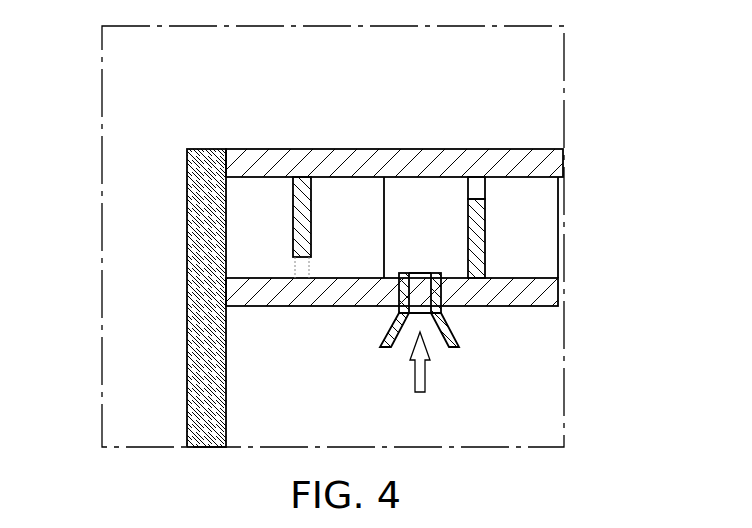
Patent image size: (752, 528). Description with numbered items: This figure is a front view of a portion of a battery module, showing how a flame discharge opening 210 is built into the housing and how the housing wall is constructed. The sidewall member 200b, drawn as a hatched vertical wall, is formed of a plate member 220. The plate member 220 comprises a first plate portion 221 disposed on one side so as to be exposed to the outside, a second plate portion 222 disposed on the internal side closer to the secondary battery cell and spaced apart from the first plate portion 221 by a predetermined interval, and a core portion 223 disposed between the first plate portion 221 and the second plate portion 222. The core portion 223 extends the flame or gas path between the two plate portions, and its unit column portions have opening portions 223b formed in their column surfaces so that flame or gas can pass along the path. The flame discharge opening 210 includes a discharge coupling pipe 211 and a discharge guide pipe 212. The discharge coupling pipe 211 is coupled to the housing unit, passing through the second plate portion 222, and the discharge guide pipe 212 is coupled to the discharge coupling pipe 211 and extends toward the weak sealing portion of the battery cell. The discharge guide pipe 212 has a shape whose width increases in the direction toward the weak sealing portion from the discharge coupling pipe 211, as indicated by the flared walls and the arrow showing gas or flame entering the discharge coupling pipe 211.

The sidewall member 200b is at (202, 197).
The flame discharge opening 210 is at (552, 339).
The discharge coupling pipe 211 is at (442, 294).
The discharge guide pipe 212 is at (457, 340).
The plate member 220 is at (476, 214).
The first plate portion 221 is at (553, 160).
The second plate portion 222 is at (558, 294).
The core portion 223 is at (482, 258).
The opening portion 223b is at (480, 185).